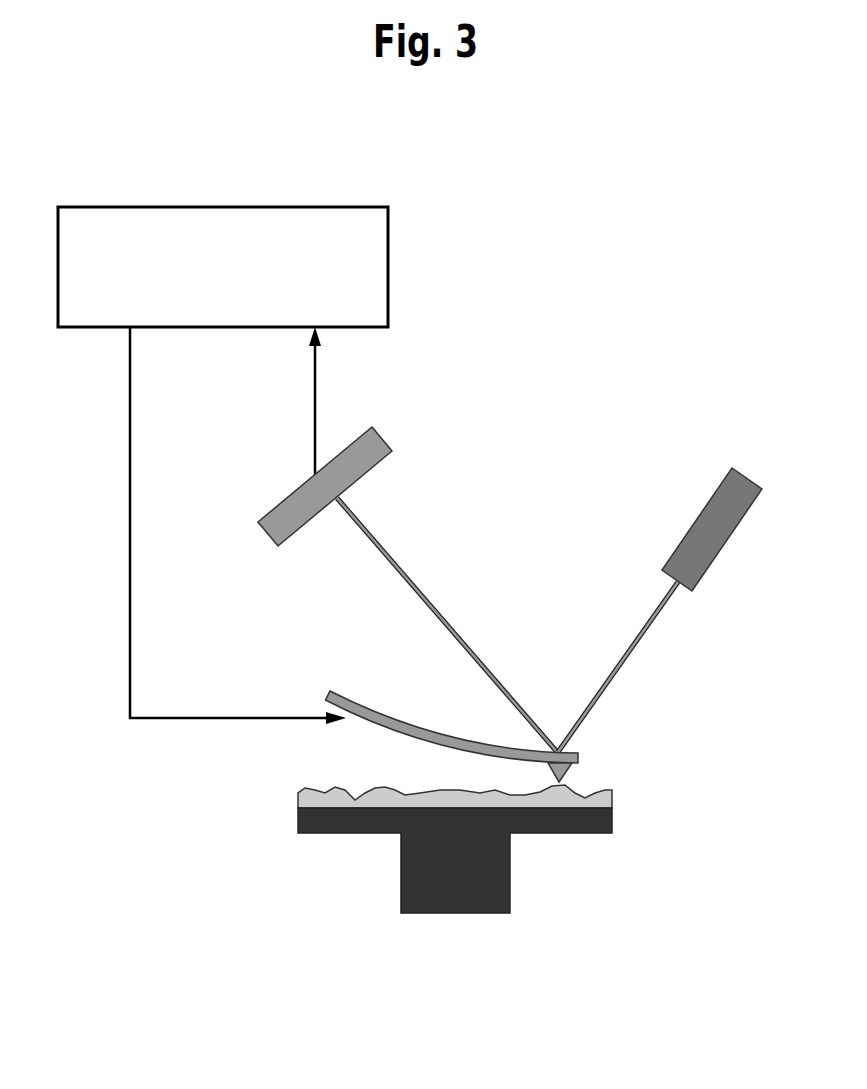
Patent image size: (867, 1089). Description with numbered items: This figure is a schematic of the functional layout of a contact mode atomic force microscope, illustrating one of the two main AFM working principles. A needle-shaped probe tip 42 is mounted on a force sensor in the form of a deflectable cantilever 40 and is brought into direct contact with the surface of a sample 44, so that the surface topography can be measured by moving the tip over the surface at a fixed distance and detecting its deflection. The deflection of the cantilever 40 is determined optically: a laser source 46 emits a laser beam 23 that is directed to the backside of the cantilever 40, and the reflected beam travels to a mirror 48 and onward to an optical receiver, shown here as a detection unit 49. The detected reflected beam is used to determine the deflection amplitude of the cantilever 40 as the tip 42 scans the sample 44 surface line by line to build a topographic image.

The controller 49 is at (388, 290).
The mirror 48 is at (390, 450).
The laser source 46 is at (723, 475).
The laser beam 23 is at (648, 620).
The cantilever 40 is at (338, 692).
The probe tip 42 is at (565, 777).
The sample 44 is at (300, 795).